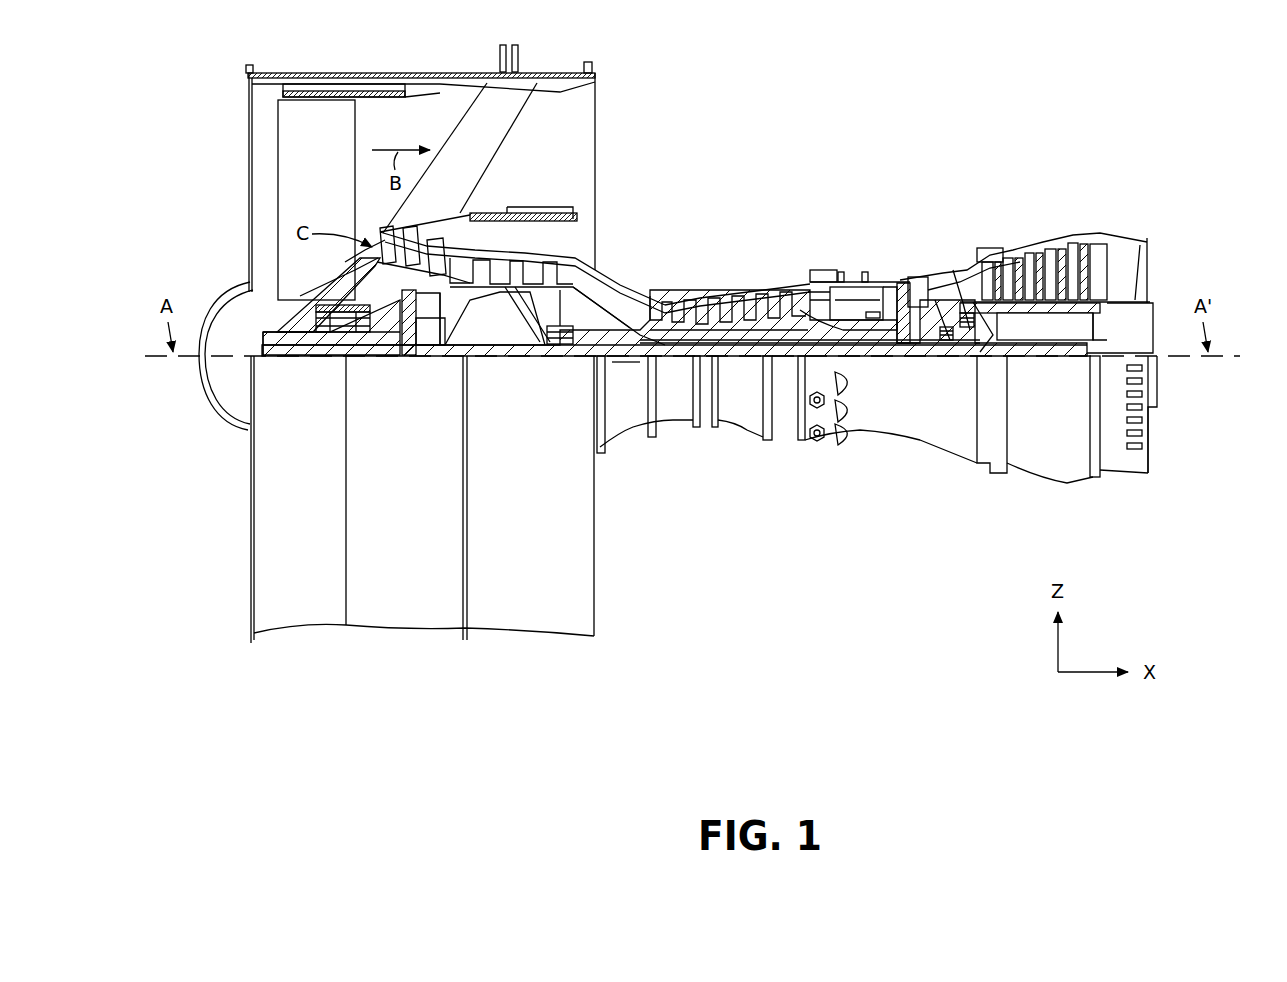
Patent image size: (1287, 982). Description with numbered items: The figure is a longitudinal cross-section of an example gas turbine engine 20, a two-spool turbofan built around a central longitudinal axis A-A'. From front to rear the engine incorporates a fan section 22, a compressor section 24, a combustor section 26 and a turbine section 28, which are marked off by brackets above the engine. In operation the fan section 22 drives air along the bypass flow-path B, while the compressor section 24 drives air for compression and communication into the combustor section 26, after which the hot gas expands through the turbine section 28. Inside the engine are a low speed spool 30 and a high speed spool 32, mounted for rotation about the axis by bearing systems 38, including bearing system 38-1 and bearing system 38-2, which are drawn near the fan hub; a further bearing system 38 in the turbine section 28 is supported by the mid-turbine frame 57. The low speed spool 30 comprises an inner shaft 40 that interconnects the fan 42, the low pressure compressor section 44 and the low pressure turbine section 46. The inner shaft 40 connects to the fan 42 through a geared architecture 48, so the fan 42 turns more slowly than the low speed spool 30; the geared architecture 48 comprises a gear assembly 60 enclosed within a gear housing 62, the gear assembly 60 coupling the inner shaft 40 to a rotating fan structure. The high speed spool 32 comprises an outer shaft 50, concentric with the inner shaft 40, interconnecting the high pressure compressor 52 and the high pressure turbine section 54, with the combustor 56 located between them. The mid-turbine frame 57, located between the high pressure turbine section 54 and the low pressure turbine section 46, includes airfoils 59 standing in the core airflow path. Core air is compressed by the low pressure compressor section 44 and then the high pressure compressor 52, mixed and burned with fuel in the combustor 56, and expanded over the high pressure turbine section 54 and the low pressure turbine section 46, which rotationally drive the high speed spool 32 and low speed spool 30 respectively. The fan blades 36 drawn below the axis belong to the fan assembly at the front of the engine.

The gas turbine engine 20 is at (901, 105).
The fan section 22 is at (460, 55).
The compressor section 24 is at (470, 163).
The combustor section 26 is at (905, 170).
The turbine section 28 is at (1095, 178).
The low speed spool 30 is at (751, 366).
The high speed spool 32 is at (780, 330).
The fan 36 is at (232, 654).
The bearing system 38 is at (958, 346).
The bearing system 38-1 is at (330, 340).
The bearing system 38-2 is at (548, 352).
The inner shaft 40 is at (615, 362).
The fan 42 is at (326, 191).
The low pressure compressor section 44 is at (528, 265).
The low pressure turbine section 46 is at (1036, 253).
The geared architecture 48 is at (430, 366).
The outer shaft 50 is at (848, 342).
The high pressure compressor 52 is at (728, 325).
The high pressure turbine section 54 is at (918, 279).
The combustor 56 is at (848, 300).
The mid-turbine frame 57 is at (958, 296).
The airfoils 59 is at (965, 300).
The gear assembly 60 is at (432, 320).
The gear housing 62 is at (441, 310).